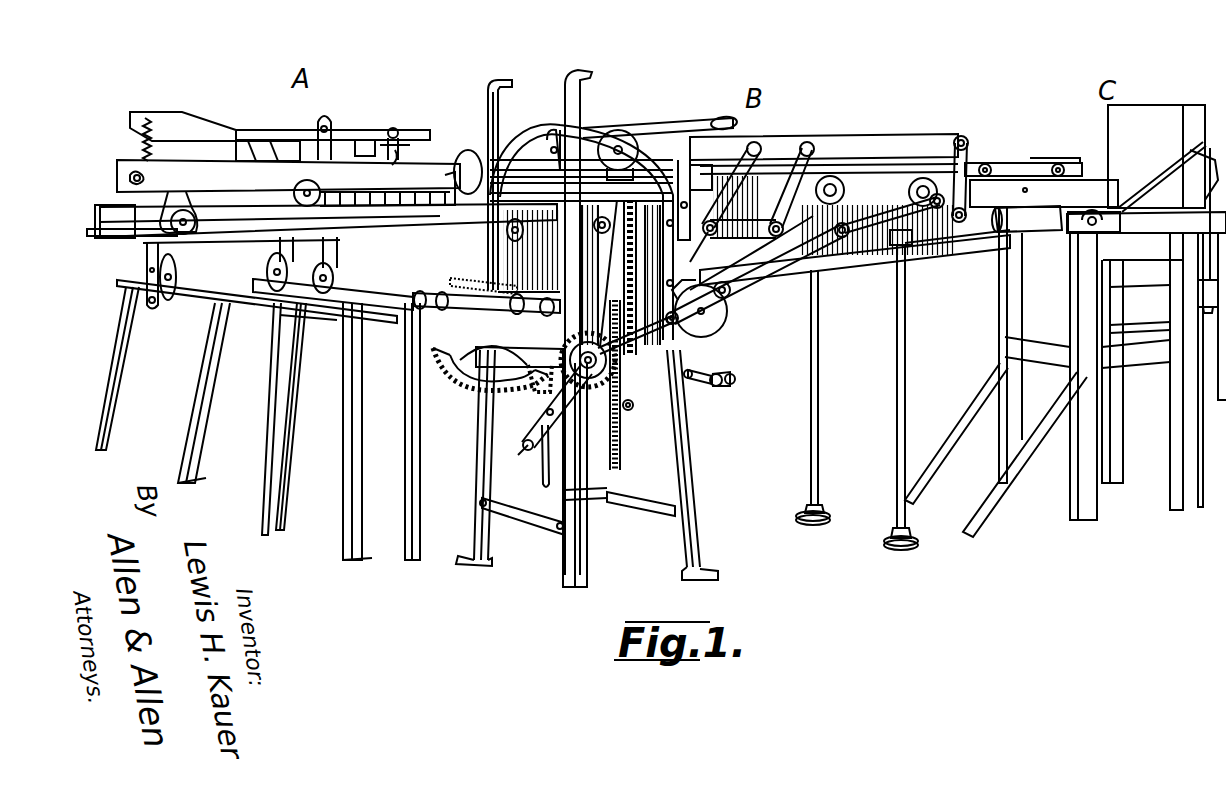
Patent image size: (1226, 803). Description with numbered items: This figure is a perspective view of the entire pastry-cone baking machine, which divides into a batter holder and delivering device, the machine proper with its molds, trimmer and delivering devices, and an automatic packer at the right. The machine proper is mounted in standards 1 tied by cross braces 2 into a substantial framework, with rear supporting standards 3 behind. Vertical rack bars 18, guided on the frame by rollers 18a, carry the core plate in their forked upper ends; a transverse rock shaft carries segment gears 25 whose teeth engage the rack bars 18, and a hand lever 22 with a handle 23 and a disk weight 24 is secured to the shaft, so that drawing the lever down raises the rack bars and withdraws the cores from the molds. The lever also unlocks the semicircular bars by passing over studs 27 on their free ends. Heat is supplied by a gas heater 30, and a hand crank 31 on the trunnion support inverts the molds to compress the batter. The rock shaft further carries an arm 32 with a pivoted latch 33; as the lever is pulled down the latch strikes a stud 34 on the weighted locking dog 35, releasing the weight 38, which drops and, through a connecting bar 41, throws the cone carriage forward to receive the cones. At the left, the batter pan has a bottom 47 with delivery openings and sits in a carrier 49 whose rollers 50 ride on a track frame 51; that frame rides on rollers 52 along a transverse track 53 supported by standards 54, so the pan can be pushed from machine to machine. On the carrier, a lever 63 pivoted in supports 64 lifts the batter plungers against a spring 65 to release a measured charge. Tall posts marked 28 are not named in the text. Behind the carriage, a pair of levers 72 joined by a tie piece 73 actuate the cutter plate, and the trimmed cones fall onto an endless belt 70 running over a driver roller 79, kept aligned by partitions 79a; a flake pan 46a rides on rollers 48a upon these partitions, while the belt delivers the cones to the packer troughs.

The standards 1 is at (480, 432).
The cross braces 2 is at (523, 350).
The rear supporting standards 3 is at (895, 397).
The rack bar 18 is at (618, 388).
The rollers 18a is at (646, 406).
The hand lever 22 is at (636, 132).
The handle 23 is at (724, 116).
The disk weight 24 is at (612, 140).
The segment gears 25 is at (462, 375).
The studs 27 is at (503, 318).
The upright posts 28 is at (488, 106).
The gas heater 30 is at (630, 385).
The hand crank 31 is at (635, 277).
The arm 32 is at (545, 412).
The latch 33 is at (543, 480).
The stud 34 is at (733, 384).
The weighted locking dog 35 is at (700, 382).
The weight 38 is at (708, 334).
The connecting bar 41 is at (843, 240).
The pan 46a is at (1010, 163).
The bottom 47 is at (290, 148).
The rollers 48a is at (984, 162).
The carrier 49 is at (197, 176).
The rollers 50 is at (196, 222).
The track frame 51 is at (262, 222).
The rollers 52 is at (268, 270).
The transverse track 53 is at (277, 314).
The standards 54 is at (198, 428).
The lever 63 is at (356, 130).
The supports 64 is at (326, 118).
The spring 65 is at (142, 148).
The belt 70 is at (958, 250).
The levers 72 is at (756, 146).
The tie piece 73 is at (745, 222).
The driver roller 79 is at (738, 298).
The partitions 79a is at (1010, 232).